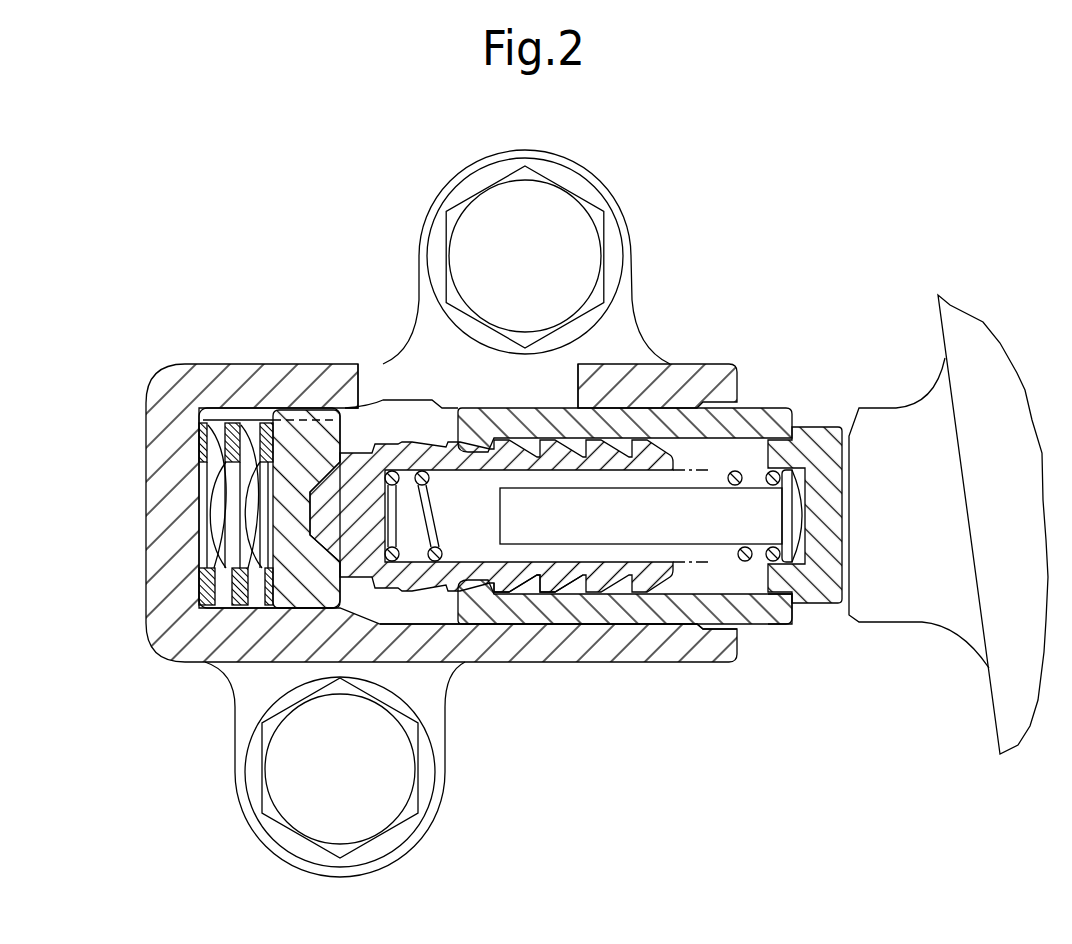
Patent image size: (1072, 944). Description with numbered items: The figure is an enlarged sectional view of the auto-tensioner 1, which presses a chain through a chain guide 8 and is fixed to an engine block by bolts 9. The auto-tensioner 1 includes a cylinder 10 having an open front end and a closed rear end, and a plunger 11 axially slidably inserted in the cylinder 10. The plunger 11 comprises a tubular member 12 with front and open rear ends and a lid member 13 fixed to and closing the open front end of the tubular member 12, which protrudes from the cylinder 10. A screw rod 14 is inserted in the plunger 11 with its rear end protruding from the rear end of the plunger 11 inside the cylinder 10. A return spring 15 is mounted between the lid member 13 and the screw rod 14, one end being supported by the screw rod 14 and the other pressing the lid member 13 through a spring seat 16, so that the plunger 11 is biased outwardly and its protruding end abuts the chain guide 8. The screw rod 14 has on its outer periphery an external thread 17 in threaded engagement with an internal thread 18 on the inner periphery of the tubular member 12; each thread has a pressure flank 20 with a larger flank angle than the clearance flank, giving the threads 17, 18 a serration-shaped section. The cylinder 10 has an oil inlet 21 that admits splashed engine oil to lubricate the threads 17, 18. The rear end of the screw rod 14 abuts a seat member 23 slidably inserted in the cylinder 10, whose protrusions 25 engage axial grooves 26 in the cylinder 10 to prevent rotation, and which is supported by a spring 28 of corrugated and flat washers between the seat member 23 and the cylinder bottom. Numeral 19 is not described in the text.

The auto-tensioner 1 is at (155, 383).
The chain guide 8 is at (937, 630).
The bolts 9 is at (573, 232).
The cylinder 10 is at (603, 650).
The plunger 11 is at (809, 597).
The tubular member 12 is at (770, 613).
The lid member 13 is at (818, 595).
The screw rod 14 is at (355, 460).
The return spring 15 is at (738, 470).
The spring seat 16 is at (800, 503).
The external thread 17 is at (500, 593).
The internal thread 18 is at (527, 587).
The threaded sleeve 19 is at (612, 443).
The pressure flank 20 is at (652, 458).
The oil inlet 21 is at (400, 378).
The seat member 23 is at (293, 592).
The protrusions 25 is at (300, 415).
The axial grooves 26 is at (233, 410).
The spring 28 is at (212, 497).